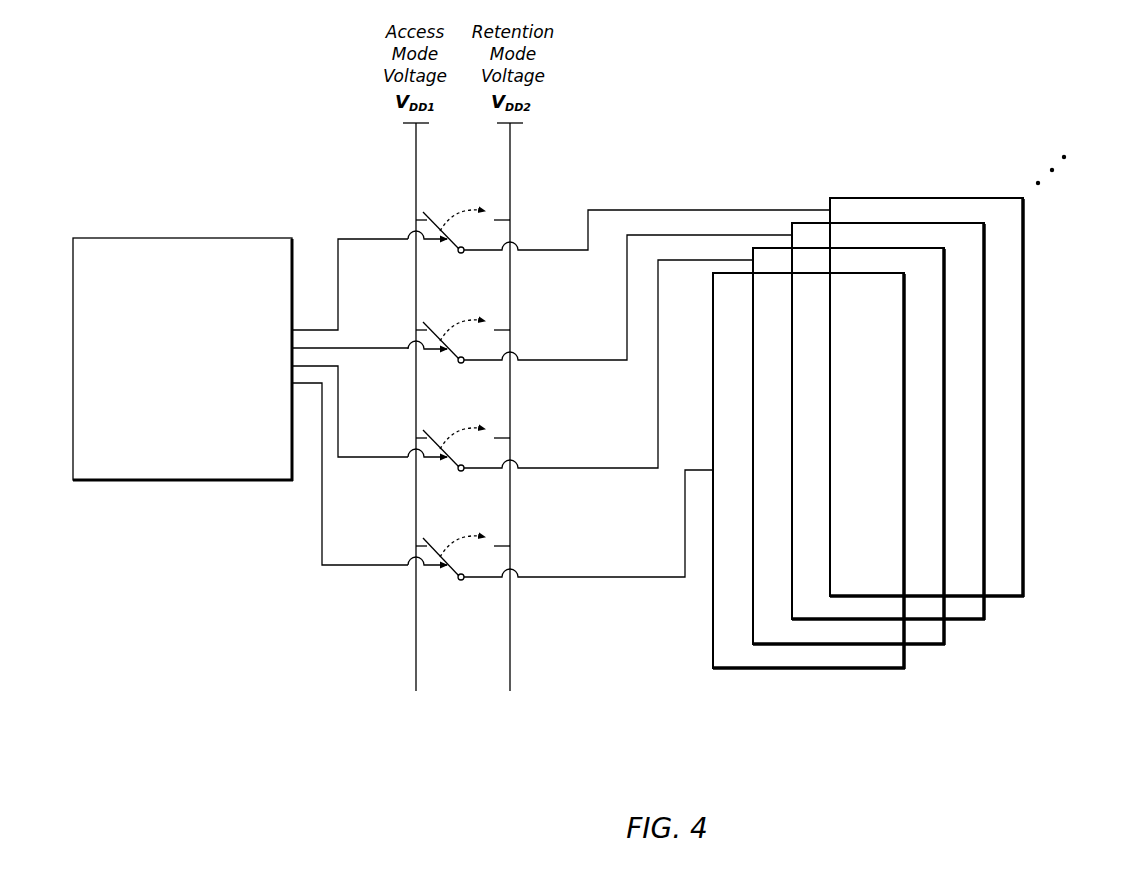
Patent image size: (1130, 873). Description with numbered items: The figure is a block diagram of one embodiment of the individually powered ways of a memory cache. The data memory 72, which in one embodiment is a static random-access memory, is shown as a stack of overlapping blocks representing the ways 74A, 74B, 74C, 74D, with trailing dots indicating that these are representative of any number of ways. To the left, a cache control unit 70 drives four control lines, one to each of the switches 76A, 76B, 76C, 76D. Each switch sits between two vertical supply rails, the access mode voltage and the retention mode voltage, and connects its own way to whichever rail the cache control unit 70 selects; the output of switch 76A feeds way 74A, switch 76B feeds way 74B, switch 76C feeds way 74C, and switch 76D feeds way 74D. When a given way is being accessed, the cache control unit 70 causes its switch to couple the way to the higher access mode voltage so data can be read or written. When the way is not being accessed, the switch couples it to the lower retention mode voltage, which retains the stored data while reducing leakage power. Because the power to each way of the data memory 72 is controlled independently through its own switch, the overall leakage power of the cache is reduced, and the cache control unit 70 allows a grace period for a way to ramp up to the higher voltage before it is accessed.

The cache control unit 70 is at (183, 359).
The data memory 72 is at (905, 407).
The way 74A is at (809, 471).
The way 74B is at (870, 248).
The way 74C is at (900, 223).
The way 74D is at (953, 198).
The switch 76A is at (560, 539).
The switch 76B is at (580, 380).
The switch 76C is at (600, 313).
The switch 76D is at (619, 246).